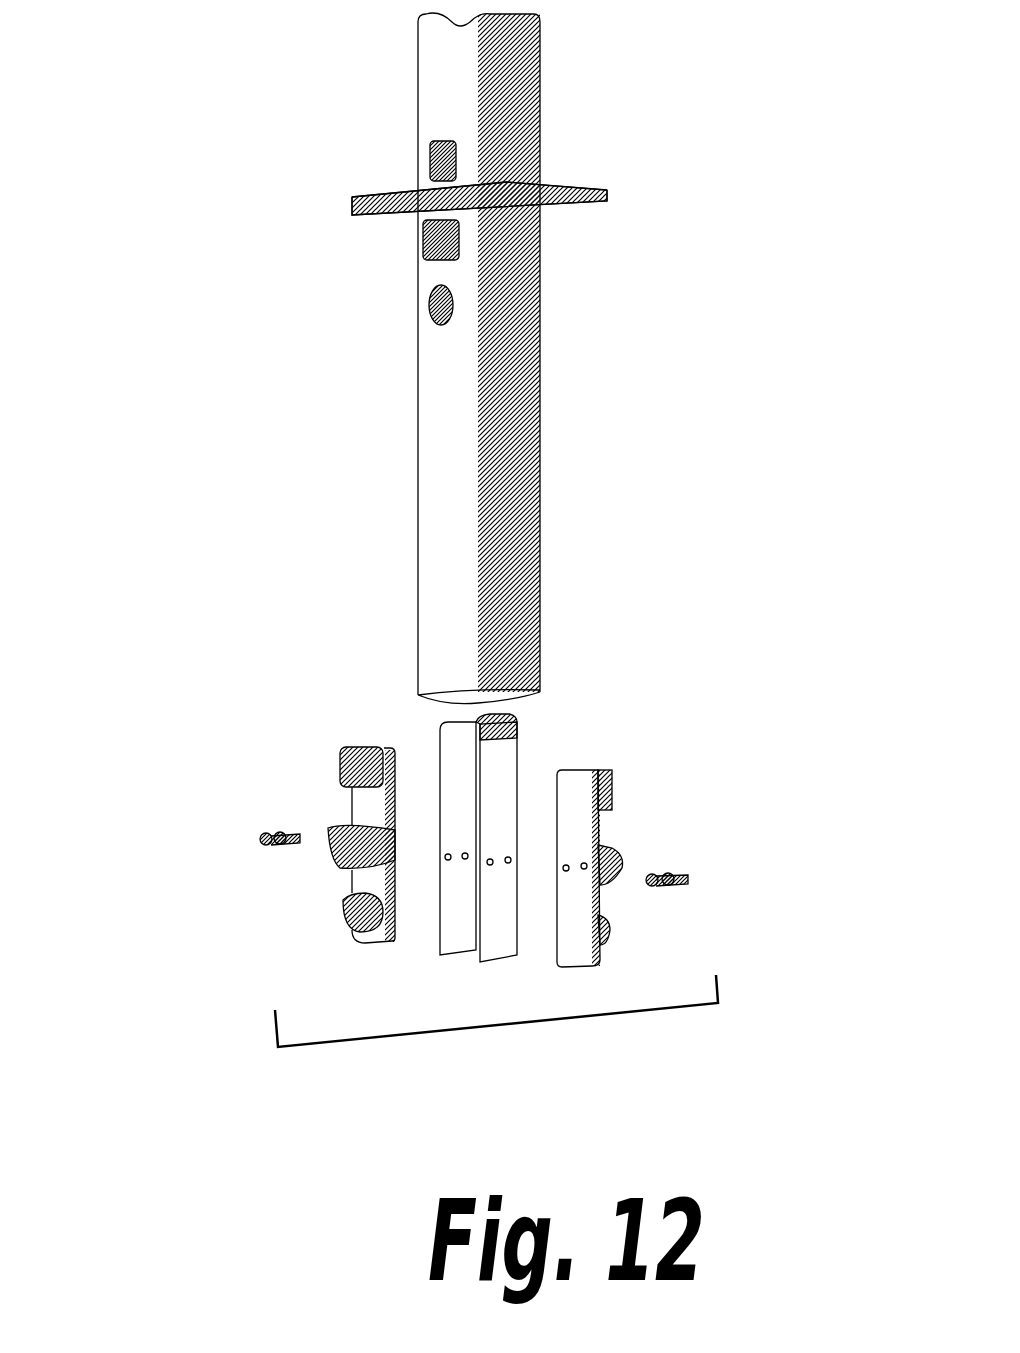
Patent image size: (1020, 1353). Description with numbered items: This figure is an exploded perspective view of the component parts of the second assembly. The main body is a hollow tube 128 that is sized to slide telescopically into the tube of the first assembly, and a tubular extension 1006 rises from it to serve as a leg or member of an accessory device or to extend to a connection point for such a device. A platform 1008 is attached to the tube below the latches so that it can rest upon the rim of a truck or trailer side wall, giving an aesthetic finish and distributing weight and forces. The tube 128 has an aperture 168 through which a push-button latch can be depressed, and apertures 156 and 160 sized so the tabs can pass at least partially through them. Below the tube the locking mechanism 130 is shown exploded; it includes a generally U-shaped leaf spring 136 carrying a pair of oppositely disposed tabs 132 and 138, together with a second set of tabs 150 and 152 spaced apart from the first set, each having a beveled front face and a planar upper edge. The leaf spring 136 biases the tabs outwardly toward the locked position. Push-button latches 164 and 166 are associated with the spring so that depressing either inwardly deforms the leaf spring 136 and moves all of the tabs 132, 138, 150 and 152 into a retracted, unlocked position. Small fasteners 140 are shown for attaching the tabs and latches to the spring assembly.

The tubular extension 1006 is at (541, 85).
The platform 1008 is at (558, 180).
The hollow tube 128 is at (525, 470).
The aperture 168 is at (432, 153).
The aperture 156 is at (440, 238).
The aperture 160 is at (445, 308).
The latch 164 is at (350, 750).
The tab 132 is at (343, 830).
The tab 150 is at (345, 905).
The fastener 140 is at (258, 840).
The leaf spring 136 is at (500, 790).
The latch 166 is at (612, 785).
The tab 138 is at (625, 858).
The tab 152 is at (608, 925).
The locking mechanism 130 is at (457, 1027).